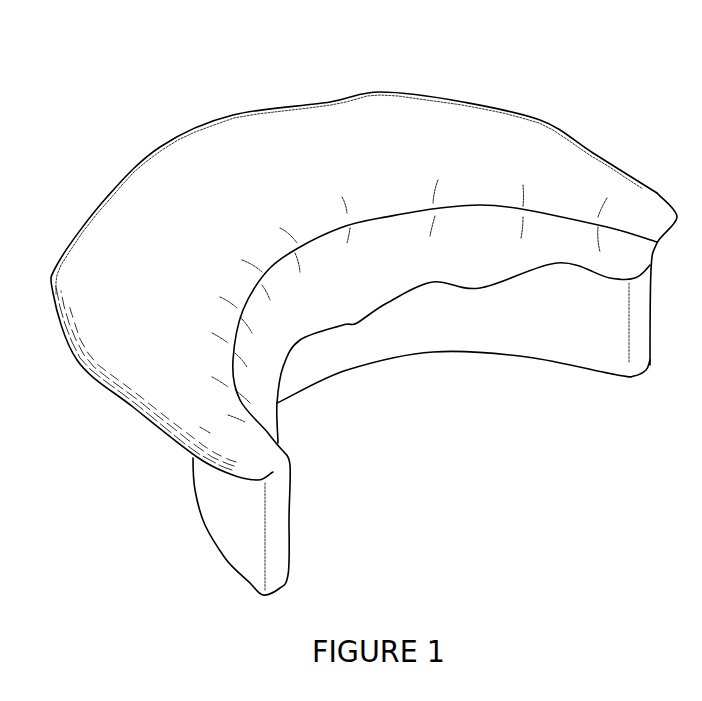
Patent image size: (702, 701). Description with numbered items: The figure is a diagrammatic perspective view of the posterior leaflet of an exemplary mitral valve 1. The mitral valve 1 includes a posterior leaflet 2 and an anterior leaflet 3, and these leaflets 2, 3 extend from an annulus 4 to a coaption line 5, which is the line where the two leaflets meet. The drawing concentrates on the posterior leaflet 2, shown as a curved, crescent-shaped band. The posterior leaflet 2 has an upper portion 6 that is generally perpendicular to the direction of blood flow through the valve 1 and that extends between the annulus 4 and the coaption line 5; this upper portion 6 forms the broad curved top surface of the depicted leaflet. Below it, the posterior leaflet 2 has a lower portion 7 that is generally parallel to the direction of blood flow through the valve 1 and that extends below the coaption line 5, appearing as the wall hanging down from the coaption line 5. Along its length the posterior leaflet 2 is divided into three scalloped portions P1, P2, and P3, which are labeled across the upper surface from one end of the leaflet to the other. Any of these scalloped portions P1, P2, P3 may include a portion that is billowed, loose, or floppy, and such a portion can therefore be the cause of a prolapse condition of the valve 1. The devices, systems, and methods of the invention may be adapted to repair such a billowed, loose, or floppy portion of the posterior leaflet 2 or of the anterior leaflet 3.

The mitral valve 1 is at (130, 128).
The posterior leaflet 2 is at (518, 135).
The anterior leaflet 3 is at (343, 325).
The annulus 4 is at (657, 197).
The coaption line 5 is at (320, 232).
The upper portion 6 is at (403, 117).
The lower portion 7 is at (557, 327).
The scalloped portion P1 is at (531, 168).
The scalloped portion P2 is at (344, 174).
The scalloped portion P3 is at (168, 350).